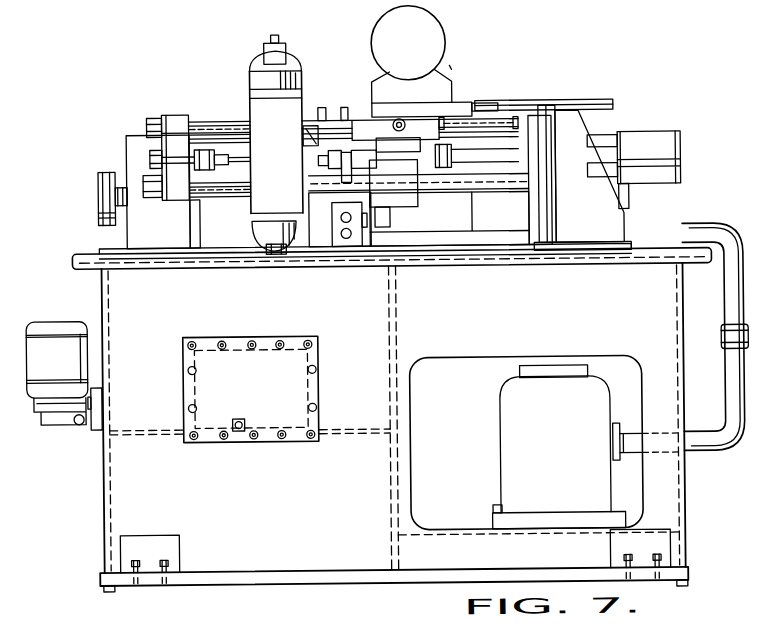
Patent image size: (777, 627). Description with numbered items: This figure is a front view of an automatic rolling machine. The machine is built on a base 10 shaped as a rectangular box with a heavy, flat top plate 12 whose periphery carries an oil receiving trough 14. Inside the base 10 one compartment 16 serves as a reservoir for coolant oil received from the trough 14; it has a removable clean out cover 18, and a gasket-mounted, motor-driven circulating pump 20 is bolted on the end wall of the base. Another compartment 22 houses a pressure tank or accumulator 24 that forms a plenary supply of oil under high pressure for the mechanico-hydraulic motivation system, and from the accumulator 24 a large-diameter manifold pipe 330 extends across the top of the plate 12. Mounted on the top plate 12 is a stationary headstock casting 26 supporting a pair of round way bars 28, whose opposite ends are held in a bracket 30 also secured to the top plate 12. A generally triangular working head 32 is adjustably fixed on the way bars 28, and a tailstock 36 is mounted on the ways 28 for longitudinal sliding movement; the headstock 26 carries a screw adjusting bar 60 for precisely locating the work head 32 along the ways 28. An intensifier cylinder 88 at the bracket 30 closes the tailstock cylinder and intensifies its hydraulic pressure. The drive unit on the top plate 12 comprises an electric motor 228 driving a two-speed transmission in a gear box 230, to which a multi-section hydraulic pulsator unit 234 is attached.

The base 10 is at (96, 508).
The top plate 12 is at (100, 247).
The oil receiving trough 14 is at (82, 249).
The internal compartment (coolant reservoir) 16 is at (392, 318).
The clean out cover 18 is at (318, 357).
The circulating pump 20 is at (59, 422).
The compartment 22 is at (681, 303).
The pressure tank or accumulator 24 is at (500, 422).
The headstock casting 26 is at (144, 130).
The way bars 28 is at (224, 123).
The bracket 30 is at (597, 222).
The working head 32 is at (309, 96).
The tailstock 36 is at (405, 203).
The screw adjusting bar 60 is at (230, 193).
The intensifier cylinder 88 is at (640, 135).
The electric motor 228 is at (443, 21).
The gear box 230 is at (467, 216).
The hydraulic pulsator unit 234 is at (612, 116).
The manifold pipe 330 is at (684, 241).